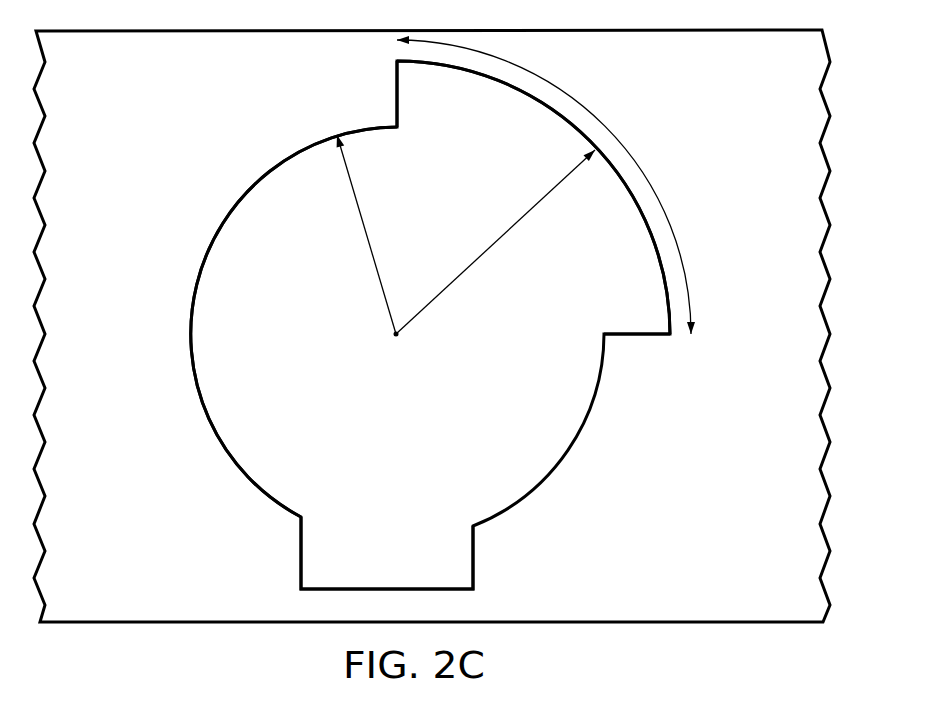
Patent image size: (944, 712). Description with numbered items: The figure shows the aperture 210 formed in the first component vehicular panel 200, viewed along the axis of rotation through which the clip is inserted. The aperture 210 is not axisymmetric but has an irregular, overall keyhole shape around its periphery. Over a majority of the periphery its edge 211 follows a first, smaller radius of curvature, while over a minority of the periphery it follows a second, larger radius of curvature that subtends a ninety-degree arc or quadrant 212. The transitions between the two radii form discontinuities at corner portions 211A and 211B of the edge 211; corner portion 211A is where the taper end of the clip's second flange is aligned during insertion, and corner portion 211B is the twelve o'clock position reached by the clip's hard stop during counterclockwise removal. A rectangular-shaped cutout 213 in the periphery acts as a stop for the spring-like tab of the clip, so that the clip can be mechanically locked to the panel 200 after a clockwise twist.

The vehicular panel 200 is at (727, 131).
The aperture 210 is at (420, 444).
The edge 211 is at (197, 298).
The corner portion 211A is at (670, 334).
The corner portion 211B is at (397, 61).
The quadrant 212 is at (590, 112).
The rectangular-shaped cutout 213 is at (454, 564).